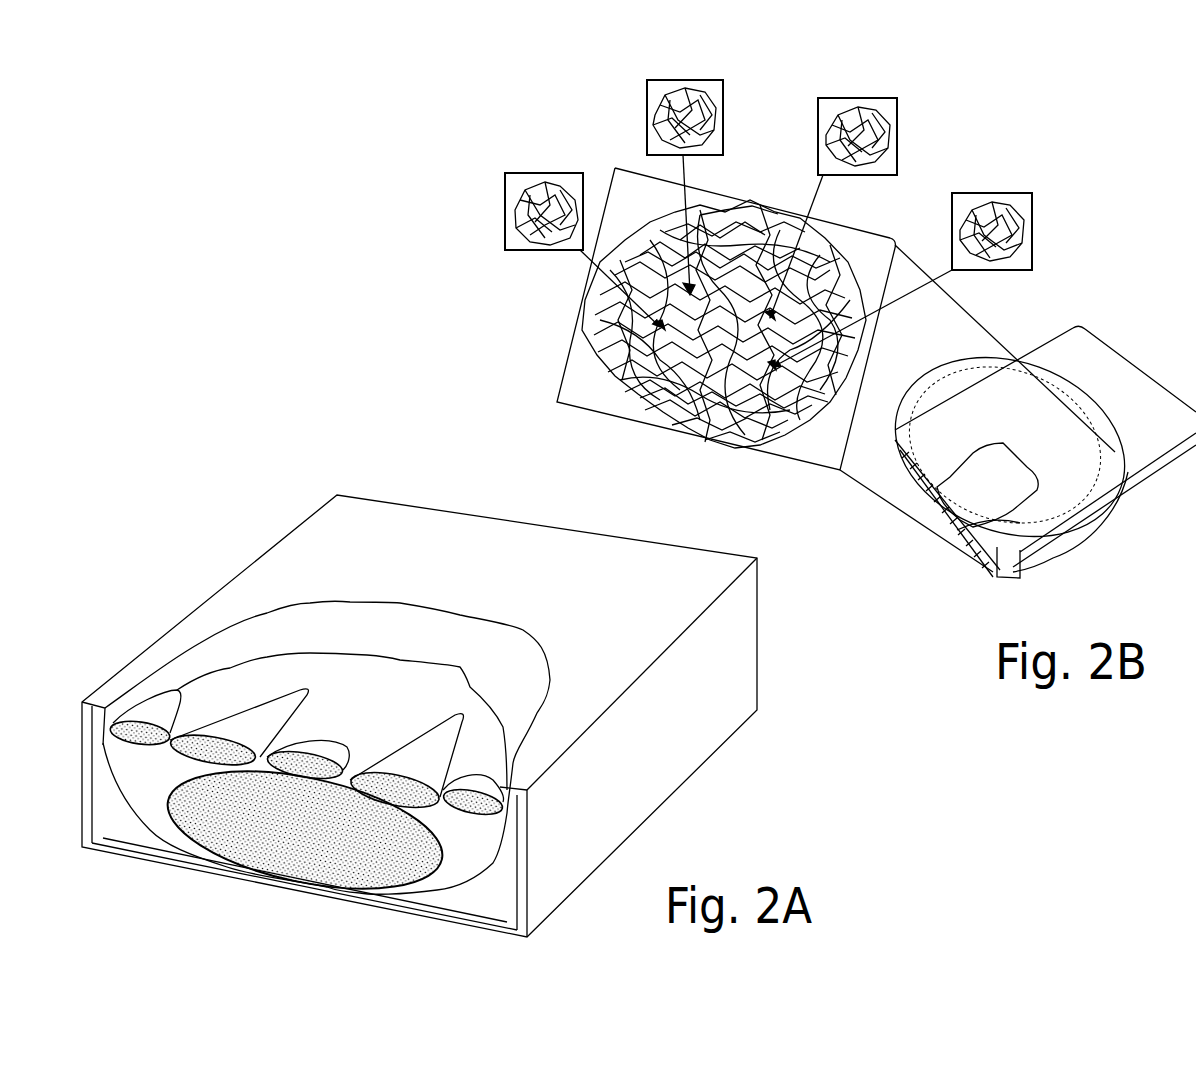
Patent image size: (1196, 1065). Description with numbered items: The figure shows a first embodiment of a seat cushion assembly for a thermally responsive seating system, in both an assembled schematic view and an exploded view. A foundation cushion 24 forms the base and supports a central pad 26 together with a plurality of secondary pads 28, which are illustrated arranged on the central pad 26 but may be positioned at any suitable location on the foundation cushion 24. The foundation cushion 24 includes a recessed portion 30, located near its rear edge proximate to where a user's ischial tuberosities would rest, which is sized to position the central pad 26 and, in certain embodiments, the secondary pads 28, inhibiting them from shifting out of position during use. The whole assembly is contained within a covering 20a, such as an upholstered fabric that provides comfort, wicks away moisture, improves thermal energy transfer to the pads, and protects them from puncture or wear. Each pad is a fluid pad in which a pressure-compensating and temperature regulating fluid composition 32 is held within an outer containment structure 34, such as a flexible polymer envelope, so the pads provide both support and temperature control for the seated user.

In FIG. 2A, the covering 20a is at (523, 630).
In FIG. 2A, the foundation cushion 24 is at (727, 713).
In FIG. 2B, the foundation cushion 24 is at (1143, 397).
In FIG. 2A, the central pad 26 is at (377, 637).
In FIG. 2B, the central pad 26 is at (603, 393).
In FIG. 2A, the secondary pads 28 is at (155, 723).
In FIG. 2B, the secondary pads 28 is at (563, 172).
In FIG. 2A, the recessed portion 30 is at (133, 797).
In FIG. 2B, the recessed portion 30 is at (977, 548).
In FIG. 2A, the fluid composition 32 is at (277, 837).
In FIG. 2A, the outer containment structure 34 is at (457, 830).